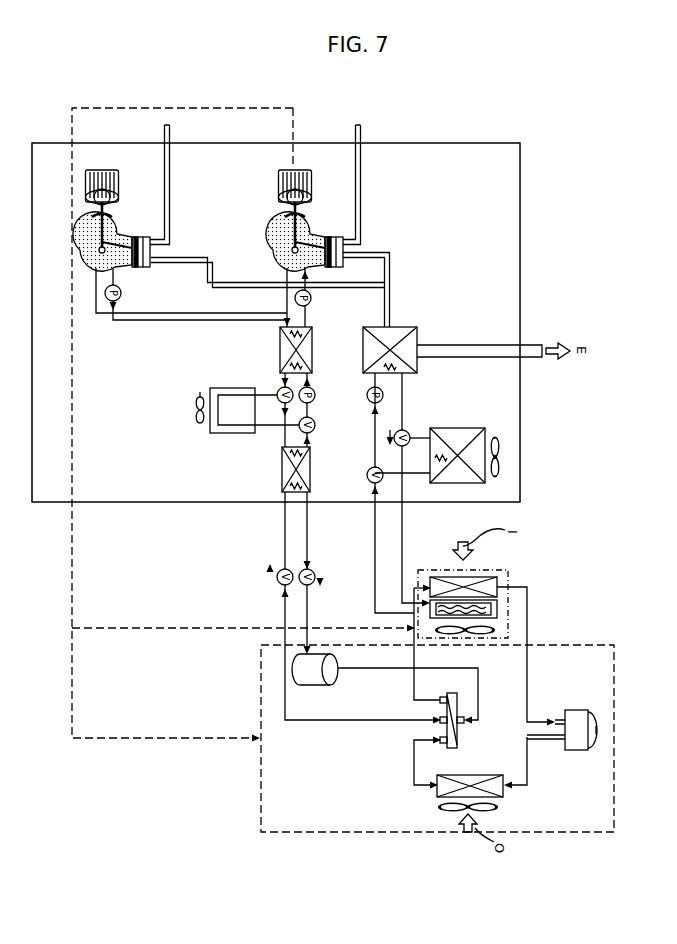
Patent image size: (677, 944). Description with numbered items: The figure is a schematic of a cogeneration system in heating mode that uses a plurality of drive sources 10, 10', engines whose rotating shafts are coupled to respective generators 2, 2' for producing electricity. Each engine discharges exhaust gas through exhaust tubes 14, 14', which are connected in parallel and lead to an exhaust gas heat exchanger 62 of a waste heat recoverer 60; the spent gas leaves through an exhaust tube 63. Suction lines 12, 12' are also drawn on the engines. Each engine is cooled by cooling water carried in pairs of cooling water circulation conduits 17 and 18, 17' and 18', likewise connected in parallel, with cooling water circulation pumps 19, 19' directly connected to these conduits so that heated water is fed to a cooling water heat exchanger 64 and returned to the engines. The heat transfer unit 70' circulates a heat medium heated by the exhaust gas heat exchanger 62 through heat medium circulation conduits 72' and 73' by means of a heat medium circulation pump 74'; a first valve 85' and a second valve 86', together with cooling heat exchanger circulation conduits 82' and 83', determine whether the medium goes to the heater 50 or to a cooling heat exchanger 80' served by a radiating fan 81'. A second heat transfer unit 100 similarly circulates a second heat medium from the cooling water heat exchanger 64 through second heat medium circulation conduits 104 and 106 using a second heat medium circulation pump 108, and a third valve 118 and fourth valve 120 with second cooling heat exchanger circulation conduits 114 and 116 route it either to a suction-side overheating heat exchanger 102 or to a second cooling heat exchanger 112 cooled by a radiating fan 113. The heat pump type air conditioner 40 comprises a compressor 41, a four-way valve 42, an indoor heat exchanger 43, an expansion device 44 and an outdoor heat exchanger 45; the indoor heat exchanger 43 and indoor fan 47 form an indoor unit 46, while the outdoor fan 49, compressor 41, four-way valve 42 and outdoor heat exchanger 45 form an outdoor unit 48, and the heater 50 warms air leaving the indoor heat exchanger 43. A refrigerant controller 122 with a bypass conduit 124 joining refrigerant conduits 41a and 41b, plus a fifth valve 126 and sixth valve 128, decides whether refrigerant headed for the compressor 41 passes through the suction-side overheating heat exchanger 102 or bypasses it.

The generator 2 is at (308, 187).
The generator 2' is at (117, 187).
The drive source 10 is at (283, 236).
The drive source 10' is at (92, 236).
The suction pipe 12 is at (371, 185).
The suction pipe 12' is at (177, 185).
The exhaust tube 14 is at (387, 290).
The exhaust tube 14' is at (267, 250).
The cooling water circulation conduit 17 is at (327, 330).
The cooling water circulation conduit 17' is at (106, 345).
The cooling water circulation conduit 18 is at (281, 297).
The cooling water circulation conduit 18' is at (164, 294).
The cooling water circulation pump 19 is at (321, 299).
The cooling water circulation pump 19' is at (127, 285).
The heat pump type air conditioner 40 is at (595, 630).
The compressor 41 is at (312, 677).
The refrigerant conduit 41a is at (284, 541).
The refrigerant conduit 41b is at (308, 531).
The 4-way valve 42 is at (462, 735).
The indoor heat exchanger 43 is at (482, 578).
The expansion device 44 is at (598, 735).
The outdoor heat exchanger 45 is at (500, 790).
The indoor unit 46 is at (517, 573).
The indoor fan 47 is at (492, 631).
The outdoor unit 48 is at (250, 797).
The outdoor fan 49 is at (440, 808).
The heater 50 is at (495, 609).
The waste heat recoverer 60 is at (467, 296).
The exhaust gas heat exchanger 62 is at (418, 362).
The exhaust tube 63 is at (490, 345).
The cooling water heat exchanger 64 is at (279, 336).
The heat transfer unit 70' is at (525, 512).
The heat medium circulation conduit 72' is at (380, 493).
The heat medium circulation conduit 73' is at (360, 585).
The heat medium circulation pump 74' is at (362, 385).
The cooling heat exchanger 80' is at (496, 446).
The radiating fan 81' is at (526, 464).
The cooling heat exchanger circulation conduit 82' is at (430, 413).
The cooling heat exchanger circulation conduit 83' is at (419, 490).
The first valve 85' is at (408, 413).
The second valve 86' is at (377, 483).
The second heat transfer unit 100 is at (266, 505).
The suction-side overheating heat exchanger 102 is at (278, 486).
The second heat medium circulation conduit 104 is at (278, 430).
The second heat medium circulation conduit 106 is at (312, 441).
The second heat medium circulation pump 108 is at (313, 390).
The second cooling heat exchanger 112 is at (213, 434).
The radiating fan 113 is at (200, 397).
The second cooling heat exchanger circulation conduit 114 is at (279, 390).
The second cooling heat exchanger circulation conduit 116 is at (256, 427).
The third valve 118 is at (284, 380).
The fourth valve 120 is at (316, 424).
The refrigerant controller 122 is at (276, 598).
The bypass conduit 124 is at (289, 587).
The fifth valve 126 is at (278, 582).
The sixth valve 128 is at (313, 584).